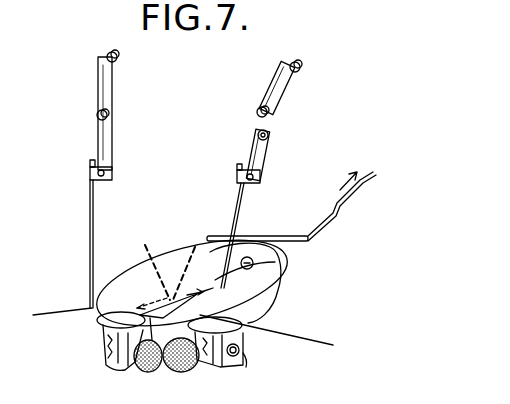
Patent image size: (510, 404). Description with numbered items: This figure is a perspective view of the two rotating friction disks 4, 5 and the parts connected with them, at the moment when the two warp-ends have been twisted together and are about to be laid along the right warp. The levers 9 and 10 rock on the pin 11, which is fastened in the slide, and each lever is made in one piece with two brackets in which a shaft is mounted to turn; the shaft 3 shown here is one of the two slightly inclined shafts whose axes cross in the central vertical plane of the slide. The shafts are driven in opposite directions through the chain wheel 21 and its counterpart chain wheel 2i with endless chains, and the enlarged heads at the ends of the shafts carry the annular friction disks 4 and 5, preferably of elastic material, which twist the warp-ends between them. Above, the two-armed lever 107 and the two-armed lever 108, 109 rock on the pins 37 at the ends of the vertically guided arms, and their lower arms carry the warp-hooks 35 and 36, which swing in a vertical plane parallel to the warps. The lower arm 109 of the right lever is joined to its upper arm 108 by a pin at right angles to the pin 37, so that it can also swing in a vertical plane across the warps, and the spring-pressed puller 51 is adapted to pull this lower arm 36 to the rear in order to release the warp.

The two-armed lever 107 is at (98, 94).
The upper arm of right two-armed lever 108 is at (278, 88).
The lower arm of right two-armed lever 109 is at (256, 158).
The pin 37 is at (98, 119).
The warp-hook 35 is at (90, 220).
The warp-hook 36 is at (242, 235).
The puller 51 is at (282, 238).
The lever 9 is at (140, 285).
The lever 10 is at (235, 303).
The pin 11 is at (255, 263).
The chain wheel 21 is at (106, 368).
The chain wheel 2i is at (218, 368).
The shaft 3 is at (246, 367).
The friction disk 4 is at (150, 372).
The friction disk 5 is at (180, 373).